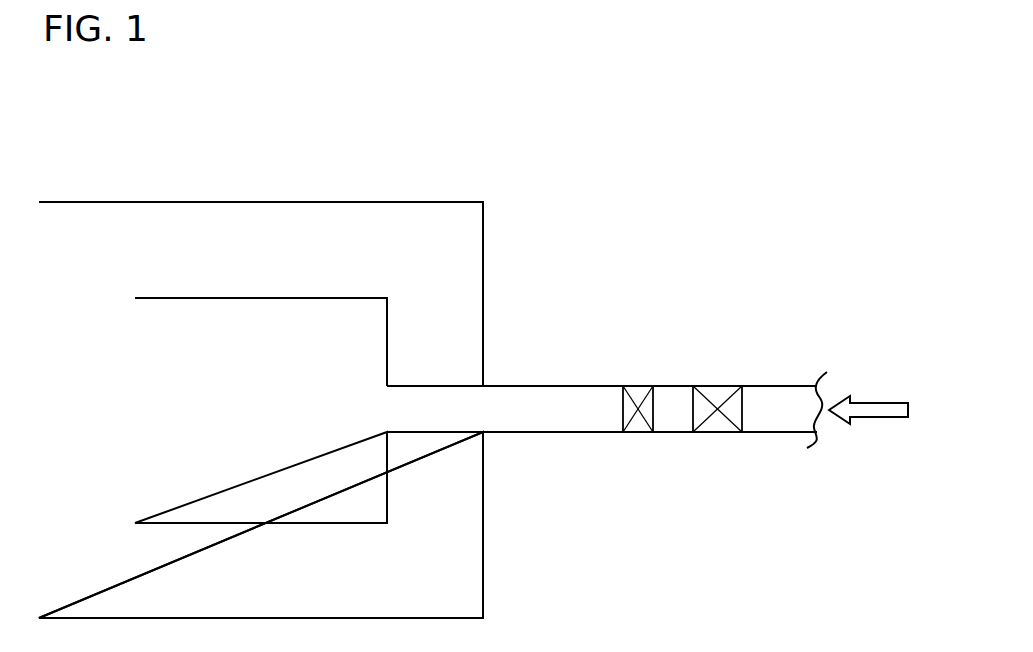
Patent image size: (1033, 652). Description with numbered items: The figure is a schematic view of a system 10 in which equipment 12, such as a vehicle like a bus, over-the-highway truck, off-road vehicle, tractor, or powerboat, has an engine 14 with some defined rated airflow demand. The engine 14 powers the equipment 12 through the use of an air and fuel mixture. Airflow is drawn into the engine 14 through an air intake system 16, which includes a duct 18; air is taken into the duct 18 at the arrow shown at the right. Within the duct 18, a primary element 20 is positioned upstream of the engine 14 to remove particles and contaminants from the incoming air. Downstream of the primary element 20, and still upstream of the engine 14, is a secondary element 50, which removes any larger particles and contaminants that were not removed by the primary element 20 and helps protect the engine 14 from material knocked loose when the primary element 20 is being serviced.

The system 10 is at (160, 165).
The equipment 12 is at (335, 200).
The engine 14 is at (253, 297).
The air intake system 16 is at (558, 338).
The duct 18 is at (558, 434).
The secondary element 50 is at (653, 407).
The primary element 20 is at (742, 407).